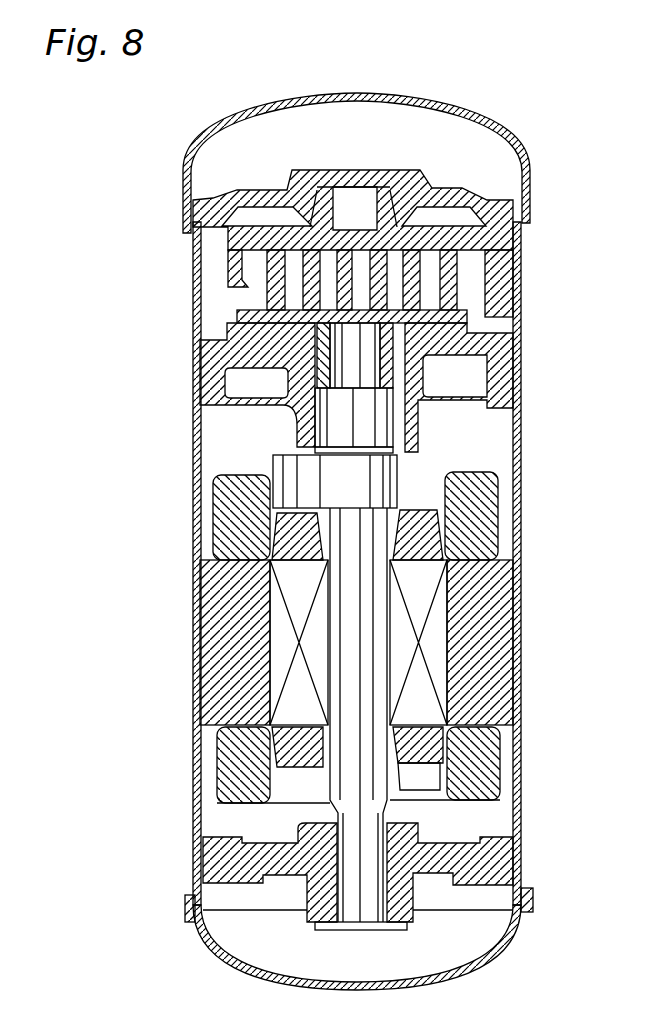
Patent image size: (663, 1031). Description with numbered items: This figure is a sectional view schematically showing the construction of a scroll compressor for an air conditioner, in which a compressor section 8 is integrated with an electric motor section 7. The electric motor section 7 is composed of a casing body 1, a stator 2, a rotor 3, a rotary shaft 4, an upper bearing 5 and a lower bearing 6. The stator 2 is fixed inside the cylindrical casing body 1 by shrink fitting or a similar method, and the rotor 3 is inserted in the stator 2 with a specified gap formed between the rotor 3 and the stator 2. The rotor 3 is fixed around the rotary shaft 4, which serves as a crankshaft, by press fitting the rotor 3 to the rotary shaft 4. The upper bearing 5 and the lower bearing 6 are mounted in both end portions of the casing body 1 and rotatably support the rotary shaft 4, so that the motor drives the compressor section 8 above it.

The casing body 1 is at (192, 457).
The stator 2 is at (210, 583).
The rotor 3 is at (285, 650).
The rotary shaft 4 is at (352, 683).
The upper bearing 5 is at (192, 353).
The lower bearing 6 is at (205, 857).
The electric motor section 7 is at (57, 337).
The compressor section 8 is at (467, 275).